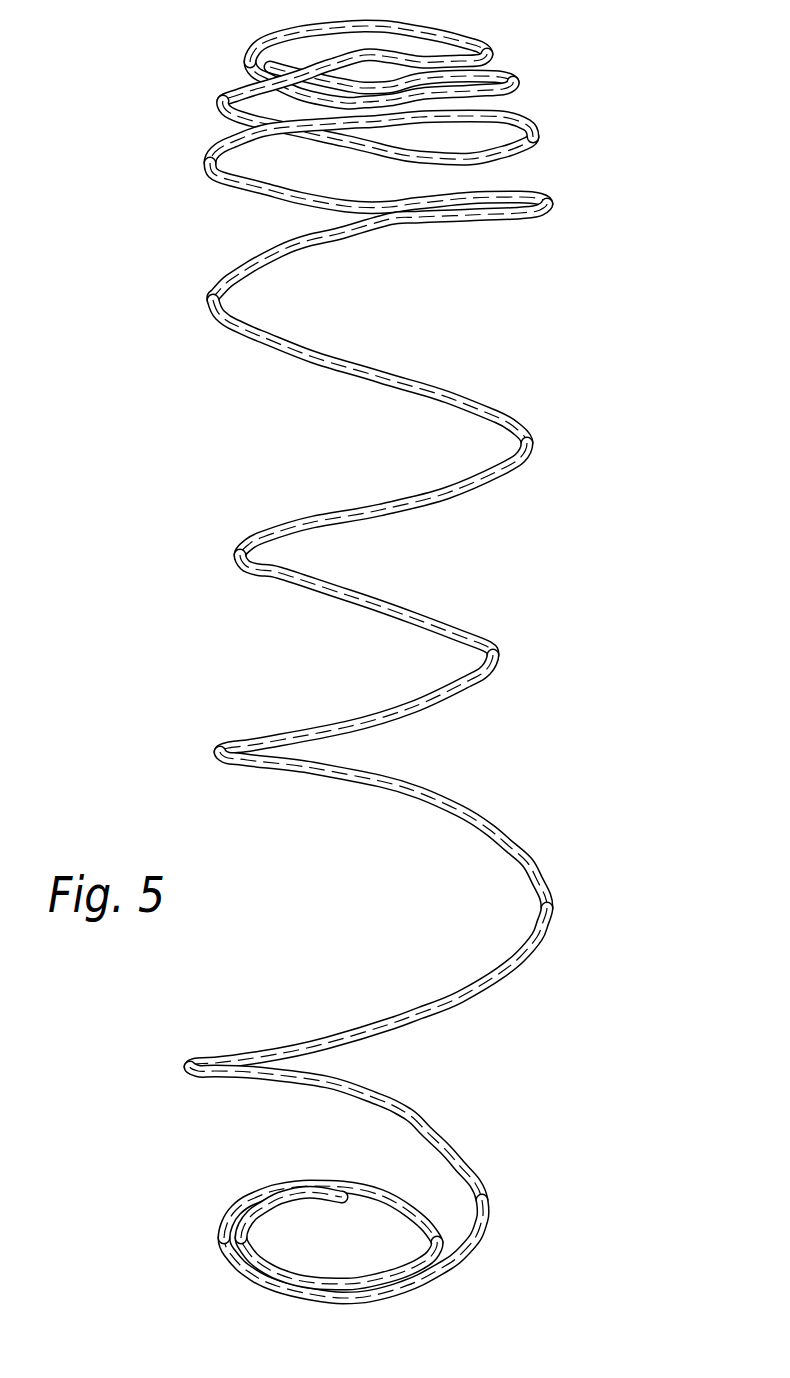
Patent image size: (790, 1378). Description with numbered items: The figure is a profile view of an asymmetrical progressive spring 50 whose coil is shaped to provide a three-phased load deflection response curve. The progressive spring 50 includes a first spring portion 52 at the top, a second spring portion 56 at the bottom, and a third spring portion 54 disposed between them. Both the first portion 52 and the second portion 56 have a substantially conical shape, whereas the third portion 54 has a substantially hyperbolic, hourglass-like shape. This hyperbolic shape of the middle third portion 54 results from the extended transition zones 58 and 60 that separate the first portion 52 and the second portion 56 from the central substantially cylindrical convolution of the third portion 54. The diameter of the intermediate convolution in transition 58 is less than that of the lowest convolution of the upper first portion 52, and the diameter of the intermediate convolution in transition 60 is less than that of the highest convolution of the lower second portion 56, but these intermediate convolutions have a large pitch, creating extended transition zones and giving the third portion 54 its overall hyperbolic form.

The progressive spring 50 is at (367, 658).
The first spring portion 52 is at (612, 15).
The third spring portion 54 is at (440, 683).
The second spring portion 56 is at (405, 1302).
The transition zone 58 is at (448, 390).
The transition zone 60 is at (376, 909).